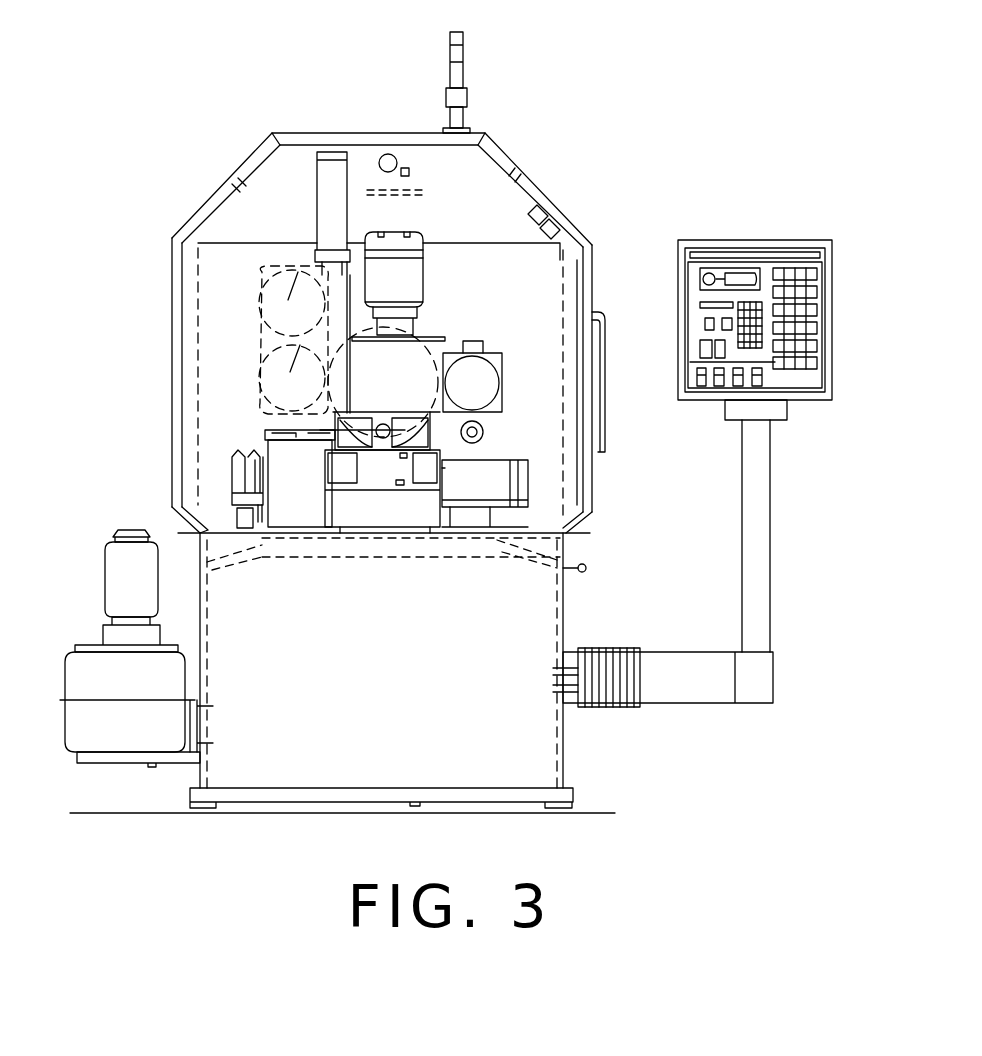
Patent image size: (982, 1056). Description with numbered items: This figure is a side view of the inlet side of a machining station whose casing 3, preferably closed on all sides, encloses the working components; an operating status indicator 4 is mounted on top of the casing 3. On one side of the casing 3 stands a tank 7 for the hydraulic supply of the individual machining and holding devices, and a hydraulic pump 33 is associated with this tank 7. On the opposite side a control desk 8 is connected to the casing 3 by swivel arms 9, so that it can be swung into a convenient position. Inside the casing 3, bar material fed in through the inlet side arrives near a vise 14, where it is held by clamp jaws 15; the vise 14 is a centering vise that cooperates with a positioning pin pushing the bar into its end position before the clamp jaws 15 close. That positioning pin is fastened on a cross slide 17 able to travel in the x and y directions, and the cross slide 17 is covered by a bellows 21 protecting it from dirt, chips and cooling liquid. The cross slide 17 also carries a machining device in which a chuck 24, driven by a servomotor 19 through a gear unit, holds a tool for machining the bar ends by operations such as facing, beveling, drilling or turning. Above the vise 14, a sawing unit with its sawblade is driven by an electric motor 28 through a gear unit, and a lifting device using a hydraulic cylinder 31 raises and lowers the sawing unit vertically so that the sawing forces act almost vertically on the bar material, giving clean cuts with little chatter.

The casing 3 is at (524, 157).
The operating status indicator 4 is at (463, 73).
The tank 7 is at (80, 671).
The control desk 8 is at (683, 398).
The swivel arms 9 is at (762, 558).
The vise 14 is at (428, 435).
The clamp jaws 15 is at (395, 452).
The cross slide 17 is at (471, 510).
The servomotor 19 is at (483, 363).
The bellows 21 is at (243, 462).
The chuck 24 is at (483, 430).
The electric motor 28 is at (425, 278).
The hydraulic cylinder 31 is at (326, 205).
The hydraulic pump 33 is at (116, 578).